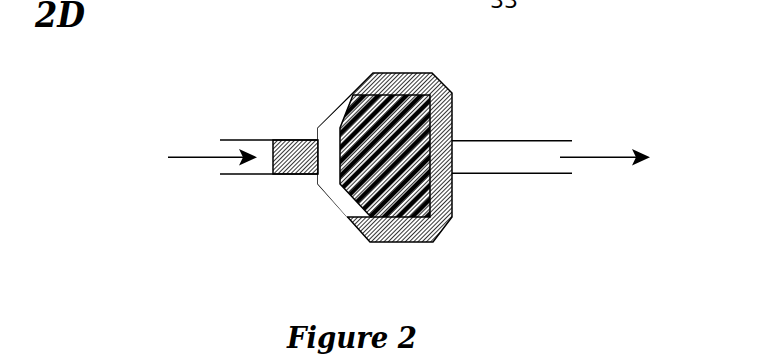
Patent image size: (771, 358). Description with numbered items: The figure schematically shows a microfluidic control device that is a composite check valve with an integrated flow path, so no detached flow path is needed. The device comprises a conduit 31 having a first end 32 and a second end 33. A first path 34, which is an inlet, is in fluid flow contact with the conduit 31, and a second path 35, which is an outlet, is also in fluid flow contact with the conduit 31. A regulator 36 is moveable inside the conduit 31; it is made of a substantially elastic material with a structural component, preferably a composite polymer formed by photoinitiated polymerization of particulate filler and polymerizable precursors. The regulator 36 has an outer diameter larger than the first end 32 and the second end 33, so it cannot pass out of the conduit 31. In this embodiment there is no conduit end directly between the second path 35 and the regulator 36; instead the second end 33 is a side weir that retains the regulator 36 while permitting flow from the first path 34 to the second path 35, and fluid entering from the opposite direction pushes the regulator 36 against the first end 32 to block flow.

The conduit 31 is at (320, 181).
The first end 32 is at (294, 157).
The second end 33 is at (452, 217).
The first path 34 is at (223, 157).
The second path 35 is at (551, 157).
The regulator 36 is at (398, 100).